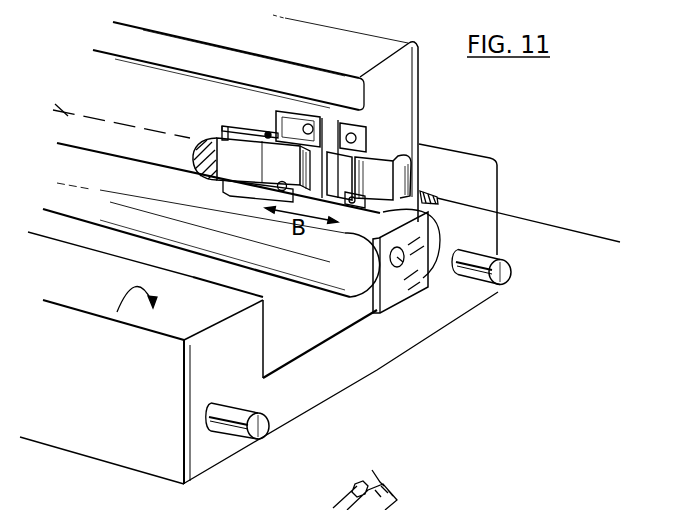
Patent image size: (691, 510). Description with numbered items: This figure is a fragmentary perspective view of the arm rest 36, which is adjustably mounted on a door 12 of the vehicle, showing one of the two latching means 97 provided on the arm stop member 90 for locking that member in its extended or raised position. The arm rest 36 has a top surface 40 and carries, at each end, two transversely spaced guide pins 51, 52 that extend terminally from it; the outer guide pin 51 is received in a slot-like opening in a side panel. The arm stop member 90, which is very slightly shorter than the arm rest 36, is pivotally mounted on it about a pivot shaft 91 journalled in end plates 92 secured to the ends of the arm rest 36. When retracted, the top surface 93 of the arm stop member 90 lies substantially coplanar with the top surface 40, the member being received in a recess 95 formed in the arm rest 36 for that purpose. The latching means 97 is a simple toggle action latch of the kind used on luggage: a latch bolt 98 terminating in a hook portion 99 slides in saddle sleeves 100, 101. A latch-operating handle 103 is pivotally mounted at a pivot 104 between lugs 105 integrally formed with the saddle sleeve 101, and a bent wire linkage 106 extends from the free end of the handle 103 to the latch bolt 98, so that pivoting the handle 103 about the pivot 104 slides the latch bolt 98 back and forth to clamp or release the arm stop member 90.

The door 12 is at (98, 87).
The arm rest 36 is at (121, 300).
The top surface 40 is at (463, 156).
The outer guide pin 51 is at (264, 427).
The guide pin 52 is at (507, 273).
The arm stop member 90 is at (364, 52).
The pivot shaft 91 is at (399, 268).
The end plate 92 is at (371, 308).
The top surface 93 is at (421, 112).
The recess 95 is at (284, 358).
The latching means 97 is at (330, 118).
The latch bolt 98 is at (374, 177).
The hook portion 99 is at (409, 182).
The saddle sleeve 100 is at (341, 171).
The saddle sleeve 101 is at (277, 165).
The latch-operating handle 103 is at (193, 181).
The pivot 104 is at (273, 127).
The lug 105 is at (269, 131).
The bent wire linkage 106 is at (224, 122).